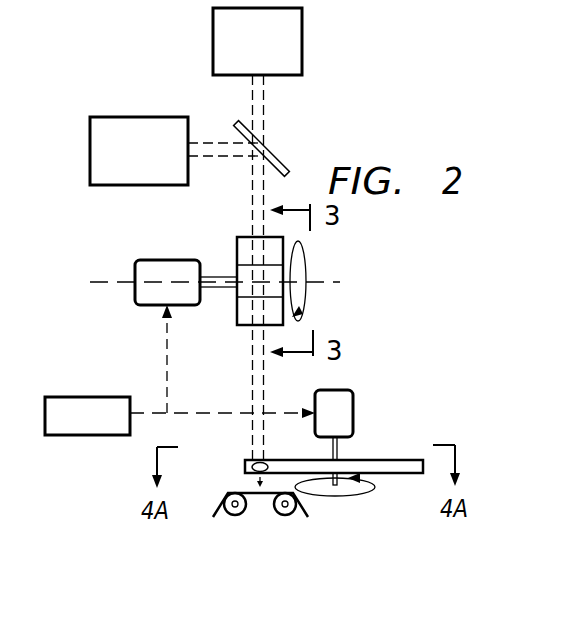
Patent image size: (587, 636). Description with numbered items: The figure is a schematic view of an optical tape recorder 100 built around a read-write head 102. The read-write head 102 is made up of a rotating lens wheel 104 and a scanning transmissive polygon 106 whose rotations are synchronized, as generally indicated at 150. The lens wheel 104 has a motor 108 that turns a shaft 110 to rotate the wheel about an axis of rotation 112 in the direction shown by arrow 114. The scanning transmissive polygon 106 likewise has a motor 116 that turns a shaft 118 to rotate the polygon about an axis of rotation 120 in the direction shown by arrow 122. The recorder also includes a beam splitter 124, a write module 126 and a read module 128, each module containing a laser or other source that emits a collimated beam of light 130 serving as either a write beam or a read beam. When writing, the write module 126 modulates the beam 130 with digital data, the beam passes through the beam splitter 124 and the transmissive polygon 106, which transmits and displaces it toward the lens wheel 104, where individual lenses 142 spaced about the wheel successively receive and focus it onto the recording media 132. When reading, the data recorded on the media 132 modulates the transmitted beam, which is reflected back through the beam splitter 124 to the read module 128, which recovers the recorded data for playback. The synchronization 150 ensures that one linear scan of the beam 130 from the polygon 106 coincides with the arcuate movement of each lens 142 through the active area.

The optical tape recorder 100 is at (346, 60).
The read-write head 102 is at (384, 307).
The lens wheel 104 is at (388, 475).
The scanning transmissive polygon 106 is at (237, 255).
The motor 108 is at (345, 390).
The shaft 110 is at (340, 448).
The axis of rotation 112 is at (332, 496).
The arrow 114 is at (352, 486).
The motor 116 is at (153, 260).
The shaft 118 is at (222, 288).
The axis of rotation 120 is at (106, 283).
The arrow 122 is at (306, 265).
The beam splitter 124 is at (270, 155).
The write module 126 is at (213, 40).
The read module 128 is at (126, 117).
The collimated beam of light 130 is at (238, 187).
The recording media 132 is at (266, 495).
The individual lenses 142 is at (252, 467).
The synchronization 150 is at (160, 413).